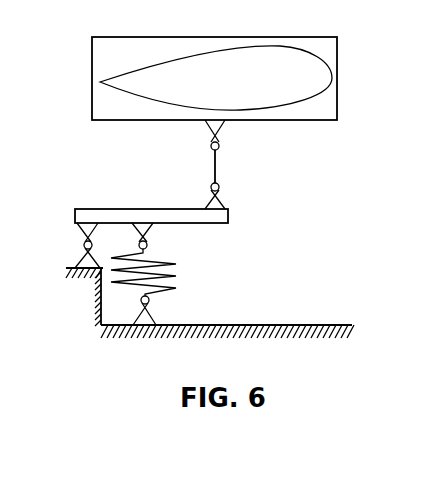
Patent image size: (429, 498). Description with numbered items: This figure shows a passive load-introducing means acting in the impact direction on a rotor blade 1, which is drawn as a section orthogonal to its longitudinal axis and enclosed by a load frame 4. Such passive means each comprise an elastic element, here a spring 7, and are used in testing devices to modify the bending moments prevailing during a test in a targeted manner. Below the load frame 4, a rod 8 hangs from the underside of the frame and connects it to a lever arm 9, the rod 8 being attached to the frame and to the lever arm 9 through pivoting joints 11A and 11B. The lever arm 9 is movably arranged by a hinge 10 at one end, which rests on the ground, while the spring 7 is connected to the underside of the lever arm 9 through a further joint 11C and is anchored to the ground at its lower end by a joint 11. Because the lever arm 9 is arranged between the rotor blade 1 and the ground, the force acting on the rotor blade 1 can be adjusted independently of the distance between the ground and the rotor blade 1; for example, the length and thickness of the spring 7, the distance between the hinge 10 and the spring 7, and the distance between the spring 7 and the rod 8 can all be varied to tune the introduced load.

The rotor blade 1 is at (325, 85).
The load frame 4 is at (91, 66).
The spring 7 is at (170, 268).
The rod 8 is at (217, 166).
The lever arm 9 is at (228, 223).
The hinge 10 is at (84, 244).
The lower hinge 11 is at (149, 302).
The upper hinge 11A is at (210, 145).
The middle hinge 11B is at (210, 187).
The plate hinge 11C is at (148, 245).